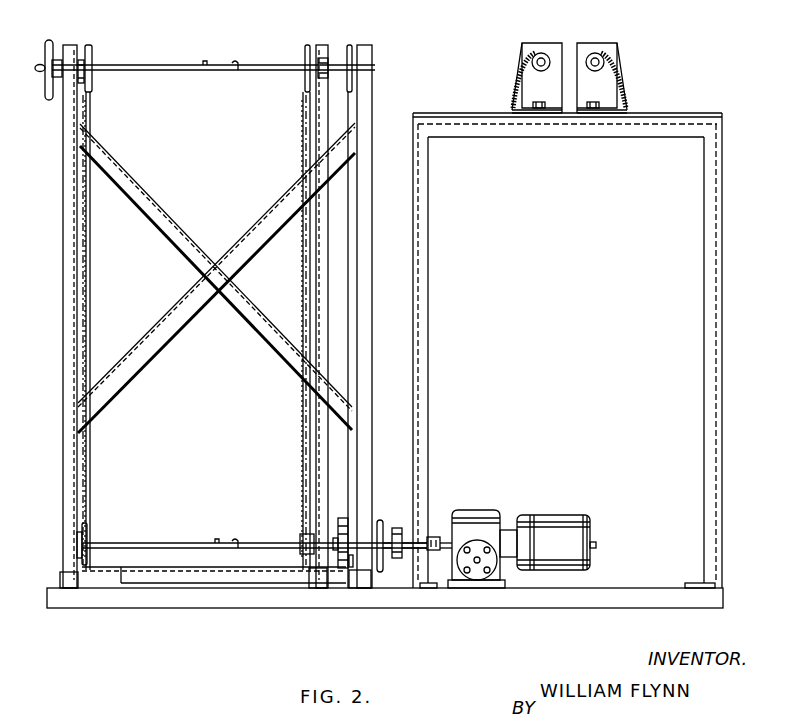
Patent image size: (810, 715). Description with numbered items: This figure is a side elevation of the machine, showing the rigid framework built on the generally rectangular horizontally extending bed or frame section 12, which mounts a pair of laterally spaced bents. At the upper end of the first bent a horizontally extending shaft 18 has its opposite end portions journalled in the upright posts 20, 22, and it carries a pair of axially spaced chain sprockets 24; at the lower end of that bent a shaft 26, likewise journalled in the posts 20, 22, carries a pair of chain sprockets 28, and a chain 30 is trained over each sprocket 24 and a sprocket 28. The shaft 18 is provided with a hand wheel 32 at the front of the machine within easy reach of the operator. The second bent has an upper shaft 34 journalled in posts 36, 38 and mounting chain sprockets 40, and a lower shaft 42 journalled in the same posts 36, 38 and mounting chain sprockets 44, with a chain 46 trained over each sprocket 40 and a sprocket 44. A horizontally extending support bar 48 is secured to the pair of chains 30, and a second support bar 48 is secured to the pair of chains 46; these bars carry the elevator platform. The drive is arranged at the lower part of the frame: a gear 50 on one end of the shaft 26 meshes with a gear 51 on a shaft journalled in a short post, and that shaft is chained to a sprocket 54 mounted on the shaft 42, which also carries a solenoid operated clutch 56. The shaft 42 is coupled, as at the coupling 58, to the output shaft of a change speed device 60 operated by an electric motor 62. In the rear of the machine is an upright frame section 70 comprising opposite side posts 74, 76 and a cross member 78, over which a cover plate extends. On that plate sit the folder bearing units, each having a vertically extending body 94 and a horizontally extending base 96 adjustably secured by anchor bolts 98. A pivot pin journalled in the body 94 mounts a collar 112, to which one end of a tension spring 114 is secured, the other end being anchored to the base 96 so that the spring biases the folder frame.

The frame section 12 is at (541, 600).
The shaft 18 is at (224, 65).
The upright post 20 is at (211, 316).
The upright post 22 is at (322, 310).
The chain sprocket 24 is at (93, 74).
The shaft 26 is at (229, 542).
The chain sprocket 28 is at (97, 520).
The chain 30 is at (305, 166).
The hand wheel 32 is at (50, 40).
The shaft 34 is at (263, 65).
The post 36 is at (66, 490).
The post 38 is at (366, 473).
The chain sprocket 40 is at (91, 58).
The shaft 42 is at (187, 543).
The chain sprocket 44 is at (88, 532).
The chain 46 is at (90, 297).
The support bar 48 is at (220, 584).
The gear 50 is at (336, 535).
The gear 51 is at (336, 562).
The sprocket 54 is at (380, 573).
The solenoid operated clutch 56 is at (396, 527).
The coupling 58 is at (434, 537).
The change speed device 60 is at (486, 518).
The electric motor 62 is at (568, 523).
The frame section 70 is at (599, 350).
The side post 74 is at (429, 380).
The side post 76 is at (723, 368).
The cross member 78 is at (562, 138).
The bearing body 94 is at (539, 43).
The base 96 is at (542, 114).
The anchor bolt 98 is at (534, 102).
The collar 112 is at (552, 55).
The tension spring 114 is at (522, 71).